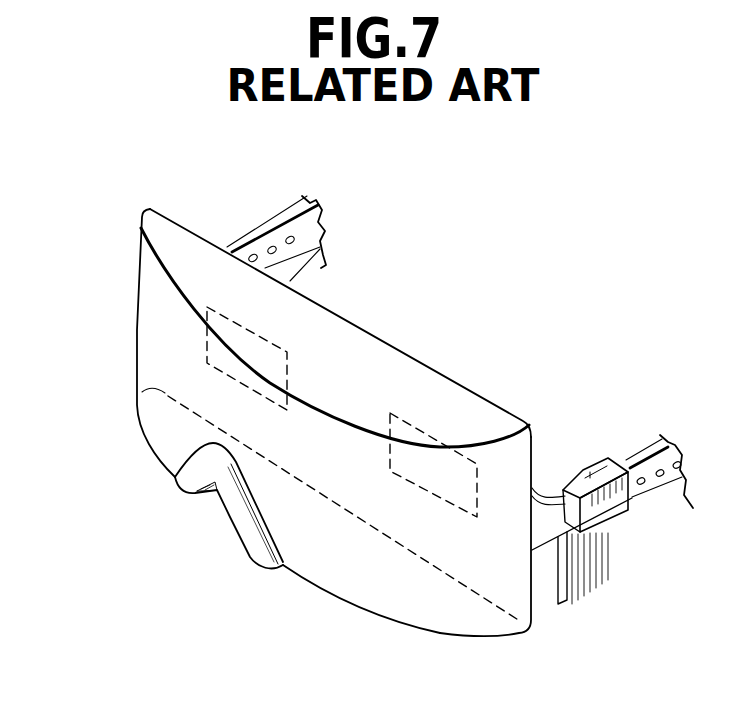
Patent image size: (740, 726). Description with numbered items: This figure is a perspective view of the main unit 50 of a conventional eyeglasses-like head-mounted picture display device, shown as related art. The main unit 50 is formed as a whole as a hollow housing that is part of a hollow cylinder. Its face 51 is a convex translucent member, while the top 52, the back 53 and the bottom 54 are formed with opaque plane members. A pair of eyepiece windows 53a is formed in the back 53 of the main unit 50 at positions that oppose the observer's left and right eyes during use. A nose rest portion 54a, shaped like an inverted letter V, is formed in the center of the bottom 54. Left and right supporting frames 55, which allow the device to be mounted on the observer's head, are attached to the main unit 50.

The main unit 50 is at (138, 302).
The face 51 is at (330, 580).
The top 52 is at (397, 367).
The back 53 is at (440, 420).
The eyepiece windows 53a is at (285, 352).
The bottom 54 is at (447, 610).
The nose rest portion 54a is at (230, 517).
The supporting frames 55 is at (268, 230).